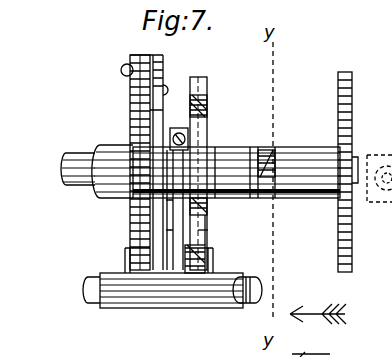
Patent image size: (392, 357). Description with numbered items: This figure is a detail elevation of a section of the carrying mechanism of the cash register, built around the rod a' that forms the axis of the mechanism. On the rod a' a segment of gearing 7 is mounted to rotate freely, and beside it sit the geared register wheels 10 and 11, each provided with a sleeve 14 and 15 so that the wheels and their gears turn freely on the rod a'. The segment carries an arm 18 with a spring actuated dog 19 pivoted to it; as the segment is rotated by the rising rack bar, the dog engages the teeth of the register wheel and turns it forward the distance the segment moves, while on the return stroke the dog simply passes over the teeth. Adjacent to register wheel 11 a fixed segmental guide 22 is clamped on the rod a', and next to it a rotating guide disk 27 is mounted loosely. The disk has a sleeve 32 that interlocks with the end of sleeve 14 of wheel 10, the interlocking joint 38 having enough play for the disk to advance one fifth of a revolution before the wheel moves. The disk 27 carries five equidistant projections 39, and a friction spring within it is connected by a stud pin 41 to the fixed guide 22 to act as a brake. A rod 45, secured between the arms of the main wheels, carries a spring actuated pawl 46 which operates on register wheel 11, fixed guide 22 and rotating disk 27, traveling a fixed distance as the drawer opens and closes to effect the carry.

The segment of gearing 7 is at (165, 124).
The geared register wheel 10 is at (332, 110).
The geared register wheel 11 is at (124, 231).
The sleeve 14 is at (298, 147).
The sleeve 15 is at (110, 139).
The arm 18 is at (171, 69).
The spring actuated dog 19 is at (121, 71).
The fixed segmental guide 22 is at (232, 230).
The rotating guide disk 27 is at (208, 125).
The sleeve 32 is at (238, 146).
The interlocking joint 38 is at (277, 146).
The projection 39 is at (208, 85).
The stud pin 41 is at (202, 232).
The rod 45 is at (250, 304).
The spring actuated pawl 46 is at (125, 262).
The rod a' is at (73, 185).